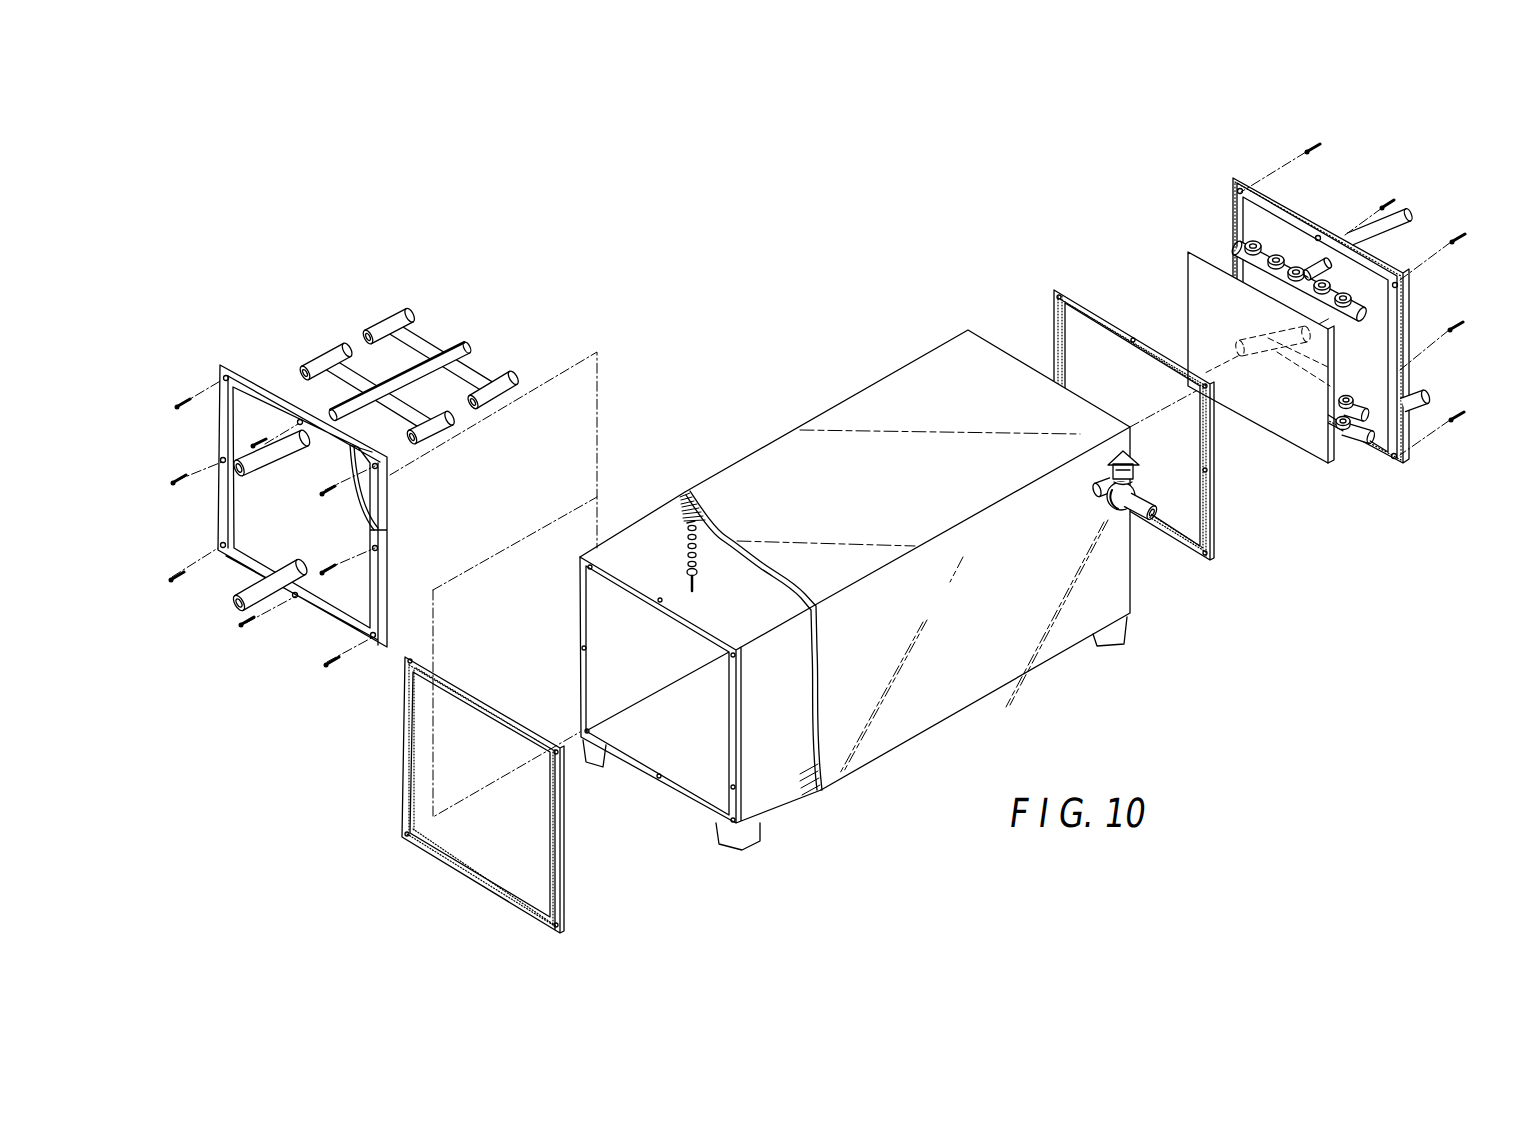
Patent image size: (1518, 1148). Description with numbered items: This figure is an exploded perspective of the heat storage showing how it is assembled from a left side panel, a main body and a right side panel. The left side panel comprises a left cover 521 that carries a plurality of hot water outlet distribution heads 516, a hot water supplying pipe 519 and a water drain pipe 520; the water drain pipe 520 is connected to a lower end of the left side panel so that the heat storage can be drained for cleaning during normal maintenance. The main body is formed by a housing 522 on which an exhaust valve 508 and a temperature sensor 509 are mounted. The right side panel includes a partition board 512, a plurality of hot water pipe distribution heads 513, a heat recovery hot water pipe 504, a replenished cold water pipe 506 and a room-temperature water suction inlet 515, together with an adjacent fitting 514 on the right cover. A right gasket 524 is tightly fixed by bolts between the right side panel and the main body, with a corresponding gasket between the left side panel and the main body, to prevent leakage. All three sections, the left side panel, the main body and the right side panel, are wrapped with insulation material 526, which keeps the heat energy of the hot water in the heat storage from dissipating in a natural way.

The heat recovery hot water pipe 504 is at (1398, 212).
The replenished cold water pipe 506 is at (1427, 396).
The exhaust valve 508 is at (1138, 480).
The temperature sensor 509 is at (688, 577).
The partition board 512 is at (1197, 290).
The hot water pipe distribution heads 513 is at (1263, 252).
The fitting 514 is at (1360, 406).
The room-temperature water suction inlet 515 is at (1344, 440).
The hot water outlet distribution heads 516 is at (322, 356).
The hot water supplying pipe 519 is at (281, 450).
The water drain pipe 520 is at (258, 596).
The left cover 521 is at (367, 481).
The housing 522 is at (630, 553).
The right gasket 524 is at (469, 696).
The insulation material 526 is at (372, 509).